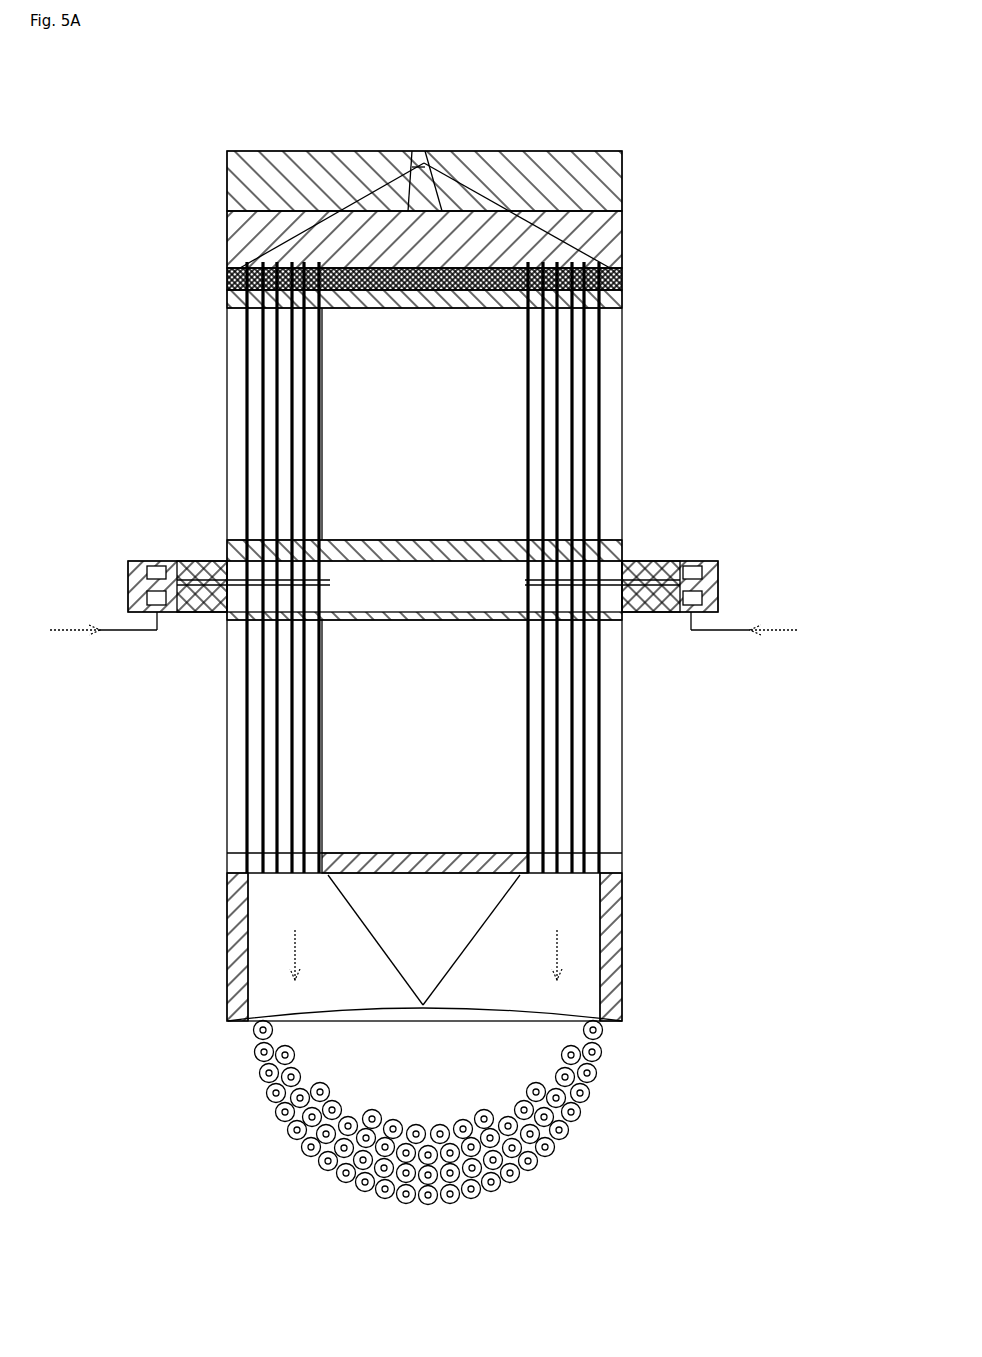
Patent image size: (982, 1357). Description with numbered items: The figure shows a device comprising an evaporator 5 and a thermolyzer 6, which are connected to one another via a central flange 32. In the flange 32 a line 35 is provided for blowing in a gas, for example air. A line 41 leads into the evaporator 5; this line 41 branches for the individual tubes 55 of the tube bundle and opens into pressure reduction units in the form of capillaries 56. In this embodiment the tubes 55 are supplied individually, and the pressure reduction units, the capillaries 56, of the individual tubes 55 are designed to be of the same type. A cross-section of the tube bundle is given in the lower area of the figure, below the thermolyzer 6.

The reactor vessel 5 is at (627, 342).
The lower reactor section 6 is at (625, 732).
The flange 32 is at (725, 581).
The coolant port 35 is at (403, 629).
The inlet 41 is at (424, 130).
The tubes 55 is at (310, 370).
The tube sheet 56 is at (597, 258).